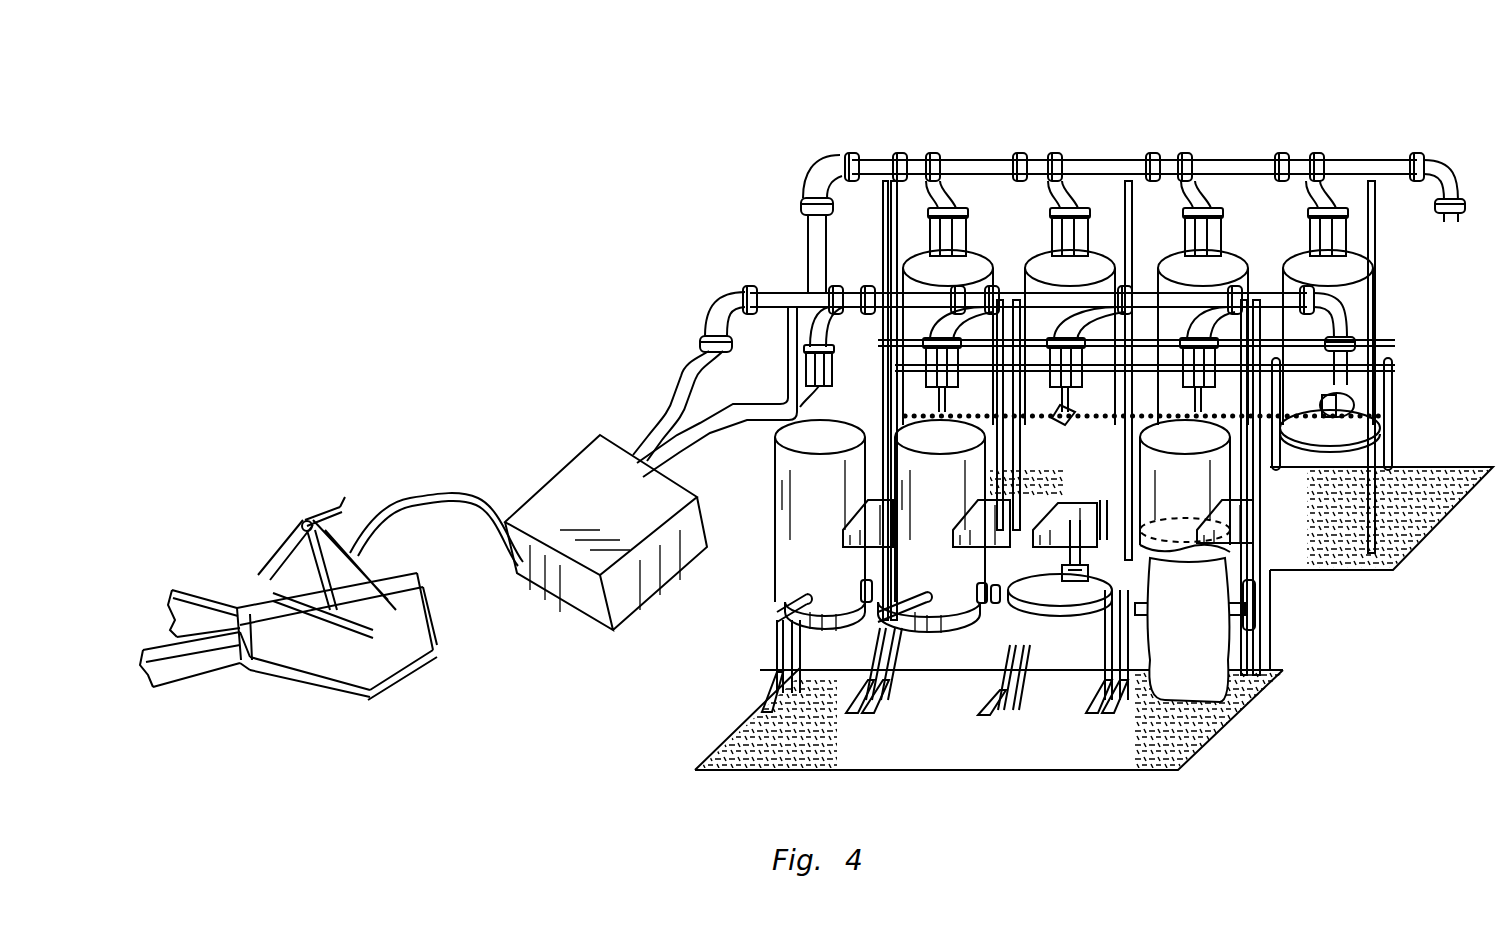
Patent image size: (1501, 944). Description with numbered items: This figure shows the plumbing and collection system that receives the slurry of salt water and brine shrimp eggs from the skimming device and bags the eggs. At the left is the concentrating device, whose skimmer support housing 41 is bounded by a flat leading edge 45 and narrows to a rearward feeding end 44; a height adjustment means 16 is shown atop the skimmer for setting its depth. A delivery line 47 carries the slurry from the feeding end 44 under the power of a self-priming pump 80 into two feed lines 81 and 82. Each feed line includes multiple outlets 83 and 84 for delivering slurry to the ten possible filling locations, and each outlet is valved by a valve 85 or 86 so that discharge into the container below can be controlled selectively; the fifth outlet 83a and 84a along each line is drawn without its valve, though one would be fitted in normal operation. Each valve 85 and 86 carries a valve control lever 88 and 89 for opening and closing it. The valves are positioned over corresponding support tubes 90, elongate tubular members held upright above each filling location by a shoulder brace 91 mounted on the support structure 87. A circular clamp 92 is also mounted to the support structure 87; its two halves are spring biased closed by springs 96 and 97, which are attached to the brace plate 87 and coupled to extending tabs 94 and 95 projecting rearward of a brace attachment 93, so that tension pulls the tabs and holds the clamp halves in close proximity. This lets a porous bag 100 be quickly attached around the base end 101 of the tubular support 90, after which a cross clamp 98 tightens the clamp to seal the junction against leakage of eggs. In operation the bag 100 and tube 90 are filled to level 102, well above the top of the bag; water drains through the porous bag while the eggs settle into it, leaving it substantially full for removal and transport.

The height adjustment means 16 is at (280, 545).
The skimmer support housing 41 is at (188, 590).
The feeding end 44 is at (310, 670).
The leading edge 45 is at (327, 680).
The delivery line 47 is at (398, 505).
The self-priming pump 80 is at (617, 510).
The feed line 81 is at (1270, 290).
The feed line 82 is at (1248, 160).
The outlet 83 is at (1058, 196).
The fifth outlet 83a is at (1462, 225).
The outlet 84 is at (940, 320).
The fifth outlet 84a is at (1393, 345).
The valve 85 is at (1058, 230).
The valve 86 is at (912, 380).
The support structure 87 is at (1258, 530).
The valve control lever 88 is at (1312, 225).
The valve control lever 89 is at (1062, 380).
The support tube 90 is at (1355, 292).
The shoulder brace 91 is at (1077, 553).
The circular clamp 92 is at (1058, 617).
The brace attachment 93 is at (1093, 588).
The extending tab 94 is at (1340, 415).
The extending tab 95 is at (1335, 395).
The spring 96 is at (1300, 437).
The spring 97 is at (1370, 450).
The cross clamp 98 is at (1228, 637).
The porous bag 100 is at (1208, 660).
The base end 101 is at (930, 600).
The fill level 102 is at (933, 628).